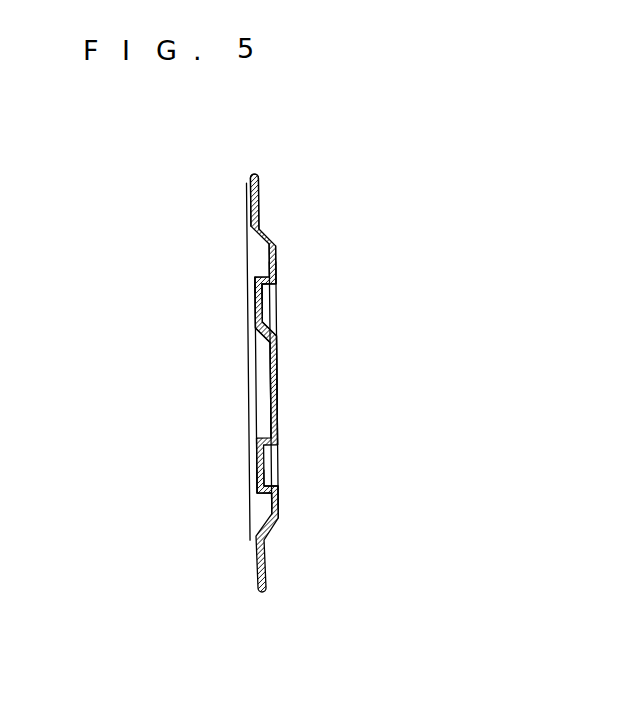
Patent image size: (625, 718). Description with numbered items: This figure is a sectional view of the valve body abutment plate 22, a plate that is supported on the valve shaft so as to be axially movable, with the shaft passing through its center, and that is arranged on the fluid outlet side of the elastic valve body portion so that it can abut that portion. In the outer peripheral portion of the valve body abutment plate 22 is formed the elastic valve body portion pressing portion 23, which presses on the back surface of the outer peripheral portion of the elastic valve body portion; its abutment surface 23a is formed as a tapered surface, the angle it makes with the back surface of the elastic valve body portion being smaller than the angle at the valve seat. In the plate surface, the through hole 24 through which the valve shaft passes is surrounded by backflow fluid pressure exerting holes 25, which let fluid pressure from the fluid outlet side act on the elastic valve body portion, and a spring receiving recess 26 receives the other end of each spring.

The valve body abutment plate 22 is at (254, 362).
The elastic valve body portion pressing portion 23 is at (247, 197).
The abutment surface 23a is at (247, 205).
The through hole 24 is at (276, 382).
The backflow fluid pressure exerting holes 25 is at (252, 310).
The spring receiving recess 26 is at (274, 315).